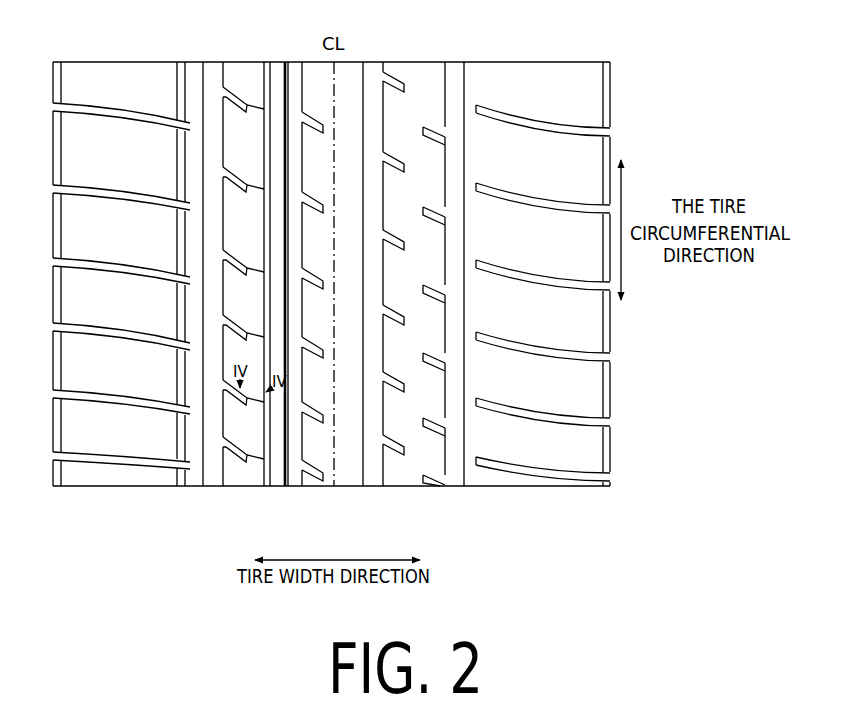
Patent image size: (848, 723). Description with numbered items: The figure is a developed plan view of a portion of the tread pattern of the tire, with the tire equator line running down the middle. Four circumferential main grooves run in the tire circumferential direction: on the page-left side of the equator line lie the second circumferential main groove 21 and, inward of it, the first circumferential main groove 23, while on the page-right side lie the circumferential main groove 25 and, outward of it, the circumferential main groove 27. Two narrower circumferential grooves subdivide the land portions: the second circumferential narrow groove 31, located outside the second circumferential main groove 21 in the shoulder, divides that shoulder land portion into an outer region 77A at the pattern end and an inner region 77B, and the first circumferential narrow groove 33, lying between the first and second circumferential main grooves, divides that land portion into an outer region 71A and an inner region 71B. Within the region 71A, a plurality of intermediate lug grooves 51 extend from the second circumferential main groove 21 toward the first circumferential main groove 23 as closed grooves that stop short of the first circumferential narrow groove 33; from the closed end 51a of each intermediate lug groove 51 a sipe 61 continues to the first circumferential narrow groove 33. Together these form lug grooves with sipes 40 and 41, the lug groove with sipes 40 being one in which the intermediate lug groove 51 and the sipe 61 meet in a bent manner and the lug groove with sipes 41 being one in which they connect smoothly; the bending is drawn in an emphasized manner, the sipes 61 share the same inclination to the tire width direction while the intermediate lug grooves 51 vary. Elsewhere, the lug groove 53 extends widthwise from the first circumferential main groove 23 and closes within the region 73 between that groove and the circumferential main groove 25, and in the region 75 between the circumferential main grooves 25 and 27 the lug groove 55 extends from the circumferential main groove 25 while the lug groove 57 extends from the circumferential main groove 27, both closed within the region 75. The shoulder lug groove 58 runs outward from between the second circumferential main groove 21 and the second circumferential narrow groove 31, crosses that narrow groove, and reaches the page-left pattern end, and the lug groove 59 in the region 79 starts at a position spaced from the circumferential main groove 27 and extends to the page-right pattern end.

The second circumferential main groove 21 is at (213, 490).
The first circumferential main groove 23 is at (294, 489).
The circumferential main groove 25 is at (375, 489).
The circumferential main groove 27 is at (455, 489).
The second circumferential narrow groove 31 is at (182, 488).
The first circumferential narrow groove 33 is at (268, 489).
The lug groove with sipes 40 is at (236, 117).
The lug groove with sipes 41 is at (232, 392).
The intermediate lug groove 51 is at (240, 265).
The closed end 51a is at (239, 252).
The lug groove 53 is at (316, 292).
The lug groove 55 is at (397, 322).
The lug groove 57 is at (432, 270).
The shoulder lug groove 58 is at (121, 262).
The lug groove 59 is at (527, 283).
The sipe 61 is at (262, 272).
The region 71A is at (247, 68).
The region 71B is at (279, 66).
The region 73 is at (352, 68).
The region 75 is at (417, 68).
The region 77A is at (131, 68).
The region 77B is at (194, 68).
The region 79 is at (520, 68).